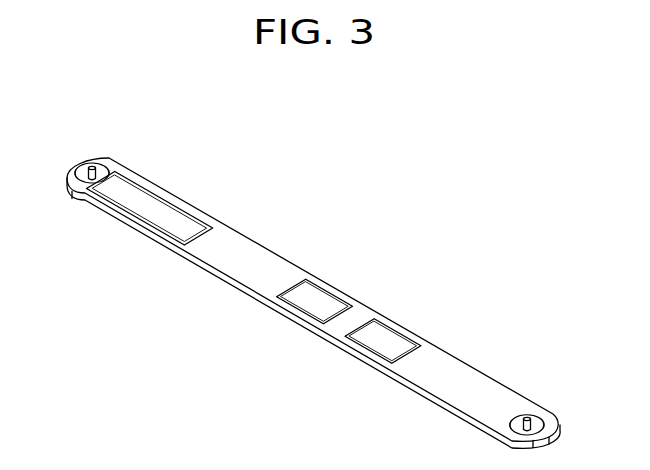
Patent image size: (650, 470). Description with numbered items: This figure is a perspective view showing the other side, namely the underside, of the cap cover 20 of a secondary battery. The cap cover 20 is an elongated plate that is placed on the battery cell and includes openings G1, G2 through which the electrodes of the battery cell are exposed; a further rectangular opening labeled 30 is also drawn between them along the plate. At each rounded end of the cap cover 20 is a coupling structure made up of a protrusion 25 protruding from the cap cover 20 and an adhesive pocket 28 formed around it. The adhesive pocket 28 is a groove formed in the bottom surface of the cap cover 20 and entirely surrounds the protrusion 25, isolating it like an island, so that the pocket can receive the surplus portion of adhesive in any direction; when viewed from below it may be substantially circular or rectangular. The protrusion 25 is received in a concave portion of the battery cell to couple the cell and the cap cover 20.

The cap cover 20 is at (480, 382).
The protrusion 25 is at (90, 167).
The adhesive pocket 28 is at (78, 172).
The rectangular hole 30 is at (388, 337).
The opening G1 is at (318, 300).
The opening G2 is at (153, 210).